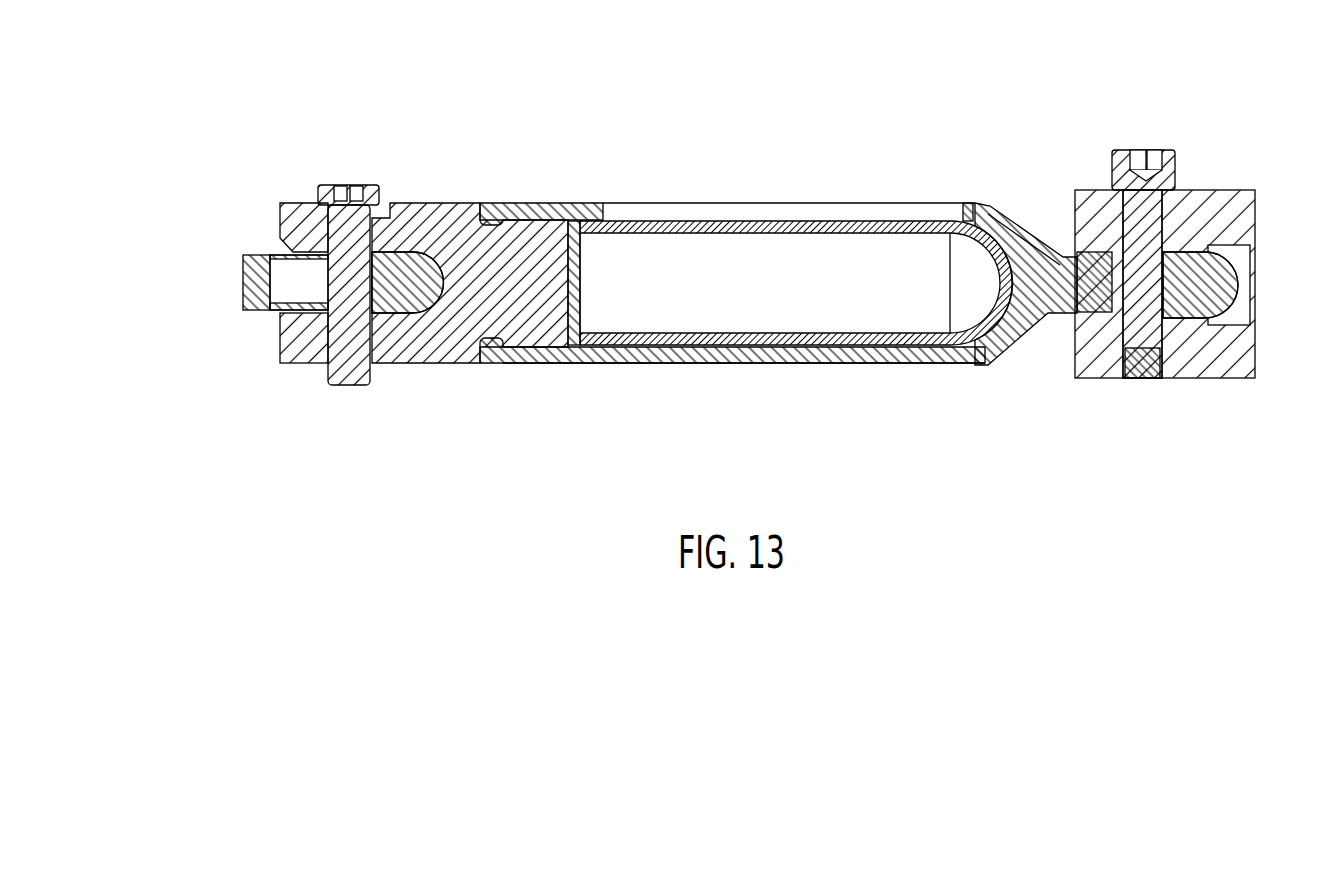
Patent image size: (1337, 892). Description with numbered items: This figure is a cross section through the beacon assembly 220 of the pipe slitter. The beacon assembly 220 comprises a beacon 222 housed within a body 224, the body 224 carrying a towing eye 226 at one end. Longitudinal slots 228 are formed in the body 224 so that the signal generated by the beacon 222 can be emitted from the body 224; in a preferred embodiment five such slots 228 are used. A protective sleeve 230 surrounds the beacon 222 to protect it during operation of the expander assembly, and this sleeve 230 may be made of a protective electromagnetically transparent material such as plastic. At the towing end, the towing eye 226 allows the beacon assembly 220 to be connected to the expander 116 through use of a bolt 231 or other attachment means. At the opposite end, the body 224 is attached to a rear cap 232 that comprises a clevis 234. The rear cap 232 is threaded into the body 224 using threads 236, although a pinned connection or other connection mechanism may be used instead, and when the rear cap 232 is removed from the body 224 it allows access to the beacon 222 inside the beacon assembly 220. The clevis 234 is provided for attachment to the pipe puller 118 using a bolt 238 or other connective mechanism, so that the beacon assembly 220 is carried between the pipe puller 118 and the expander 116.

The expander 116 is at (1228, 190).
The pipe puller 118 is at (250, 255).
The beacon assembly 220 is at (851, 101).
The beacon 222 is at (658, 268).
The body 224 is at (882, 370).
The towing eye 226 is at (1060, 250).
The longitudinal slots 228 is at (765, 210).
The protective sleeve 230 is at (762, 368).
The bolt 231 is at (1170, 152).
The rear cap 232 is at (432, 205).
The clevis 234 is at (300, 335).
The threads 236 is at (525, 350).
The bolt 238 is at (323, 188).